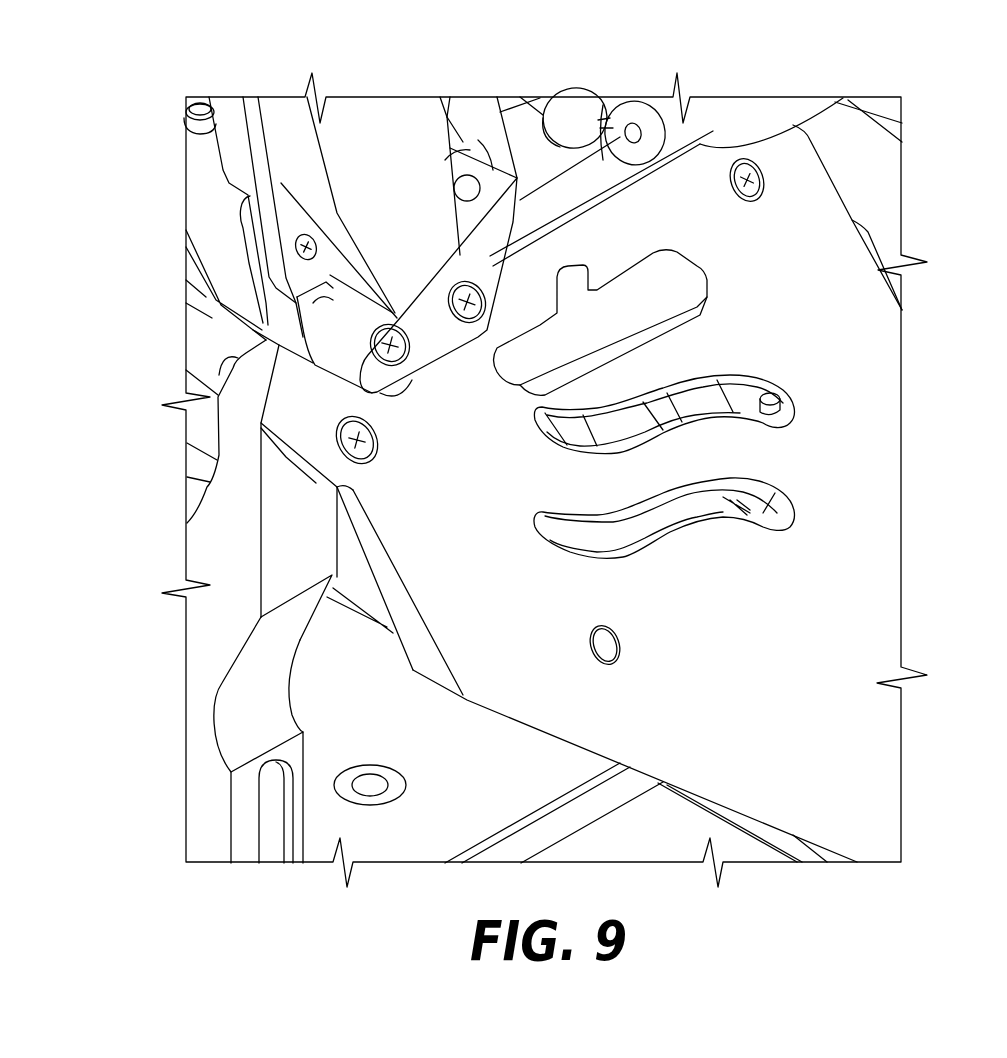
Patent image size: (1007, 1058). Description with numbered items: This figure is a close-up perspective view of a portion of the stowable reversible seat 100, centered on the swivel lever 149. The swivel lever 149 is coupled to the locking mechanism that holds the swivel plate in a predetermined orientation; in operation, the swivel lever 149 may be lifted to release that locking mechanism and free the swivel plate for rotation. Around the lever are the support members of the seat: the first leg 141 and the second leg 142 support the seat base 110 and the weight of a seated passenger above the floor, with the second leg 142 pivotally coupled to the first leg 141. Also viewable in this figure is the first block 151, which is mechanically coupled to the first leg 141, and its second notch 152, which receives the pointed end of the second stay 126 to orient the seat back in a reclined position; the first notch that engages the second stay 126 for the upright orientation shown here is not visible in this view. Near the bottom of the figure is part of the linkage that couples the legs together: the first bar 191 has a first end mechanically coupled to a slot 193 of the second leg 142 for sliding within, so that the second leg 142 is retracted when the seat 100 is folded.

The stowable reversible seat 100 is at (150, 116).
The seat base 110 is at (752, 125).
The second stay 126 is at (373, 155).
The first leg 141 is at (850, 633).
The second leg 142 is at (213, 557).
The swivel lever 149 is at (683, 305).
The first block 151 is at (493, 160).
The second notch 152 is at (467, 175).
The first bar 191 is at (550, 828).
The slot 193 is at (271, 847).